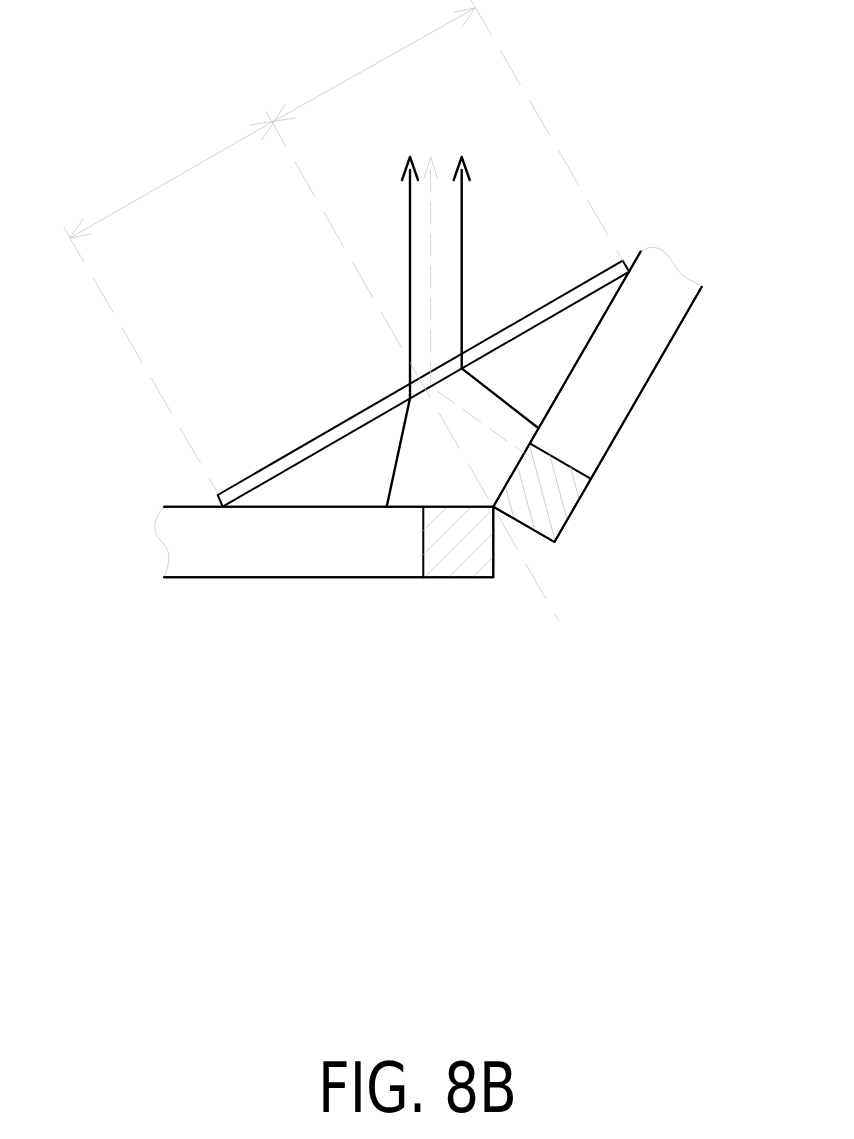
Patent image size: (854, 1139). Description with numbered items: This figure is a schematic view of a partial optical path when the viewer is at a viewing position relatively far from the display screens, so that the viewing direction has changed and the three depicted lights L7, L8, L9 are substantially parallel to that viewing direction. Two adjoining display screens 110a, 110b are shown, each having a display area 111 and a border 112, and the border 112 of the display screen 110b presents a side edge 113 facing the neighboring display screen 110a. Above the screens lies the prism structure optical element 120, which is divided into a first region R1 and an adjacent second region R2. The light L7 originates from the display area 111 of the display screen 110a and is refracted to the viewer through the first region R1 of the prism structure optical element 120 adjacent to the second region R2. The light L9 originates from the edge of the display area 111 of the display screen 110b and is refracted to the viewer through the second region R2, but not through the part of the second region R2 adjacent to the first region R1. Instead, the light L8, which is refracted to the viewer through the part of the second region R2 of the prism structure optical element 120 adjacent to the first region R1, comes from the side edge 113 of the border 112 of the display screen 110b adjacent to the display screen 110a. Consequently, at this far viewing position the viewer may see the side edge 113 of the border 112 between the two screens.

The display screen 110a is at (452, 678).
The display screen 110b is at (732, 668).
The display area 111 is at (346, 555).
The border 112 is at (462, 563).
The side edge 113 is at (504, 529).
The prism structure optical element 120 is at (202, 492).
The light L7 is at (410, 238).
The light L8 is at (428, 210).
The light L9 is at (463, 208).
The first region R1 is at (311, 362).
The second region R2 is at (448, 130).